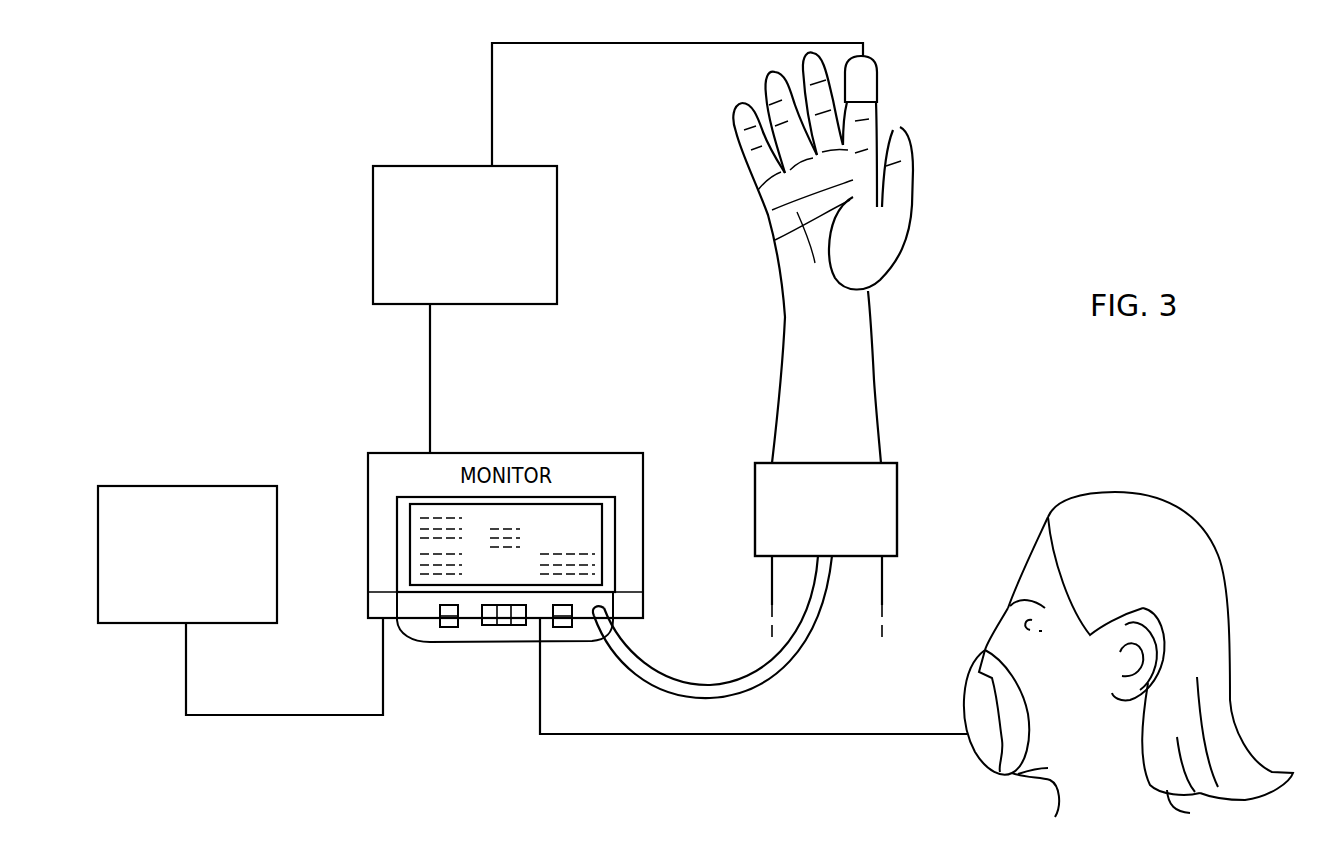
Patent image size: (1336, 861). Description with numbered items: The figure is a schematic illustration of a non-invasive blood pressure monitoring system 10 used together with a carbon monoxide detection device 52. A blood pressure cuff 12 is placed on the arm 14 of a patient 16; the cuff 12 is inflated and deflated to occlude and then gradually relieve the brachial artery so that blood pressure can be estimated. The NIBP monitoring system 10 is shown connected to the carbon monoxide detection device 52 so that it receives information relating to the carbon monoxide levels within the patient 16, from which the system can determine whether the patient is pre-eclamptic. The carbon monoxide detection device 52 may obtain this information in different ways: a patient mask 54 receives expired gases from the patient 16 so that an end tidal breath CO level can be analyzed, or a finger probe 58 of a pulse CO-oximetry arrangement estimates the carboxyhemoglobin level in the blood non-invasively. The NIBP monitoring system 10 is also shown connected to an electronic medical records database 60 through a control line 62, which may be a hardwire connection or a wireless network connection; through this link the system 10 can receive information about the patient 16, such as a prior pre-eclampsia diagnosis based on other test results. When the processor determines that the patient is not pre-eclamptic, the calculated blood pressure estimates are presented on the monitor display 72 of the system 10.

The NIBP monitoring system 10 is at (676, 292).
The blood pressure cuff 12 is at (899, 505).
The arm 14 is at (836, 420).
The patient 16 is at (872, 354).
The carbon monoxide detection device 52 is at (392, 165).
The patient mask 54 is at (968, 690).
The finger probe 58 is at (878, 63).
The electronic medical records database 60 is at (165, 486).
The control line 62 is at (312, 715).
The monitor display 72 is at (582, 503).